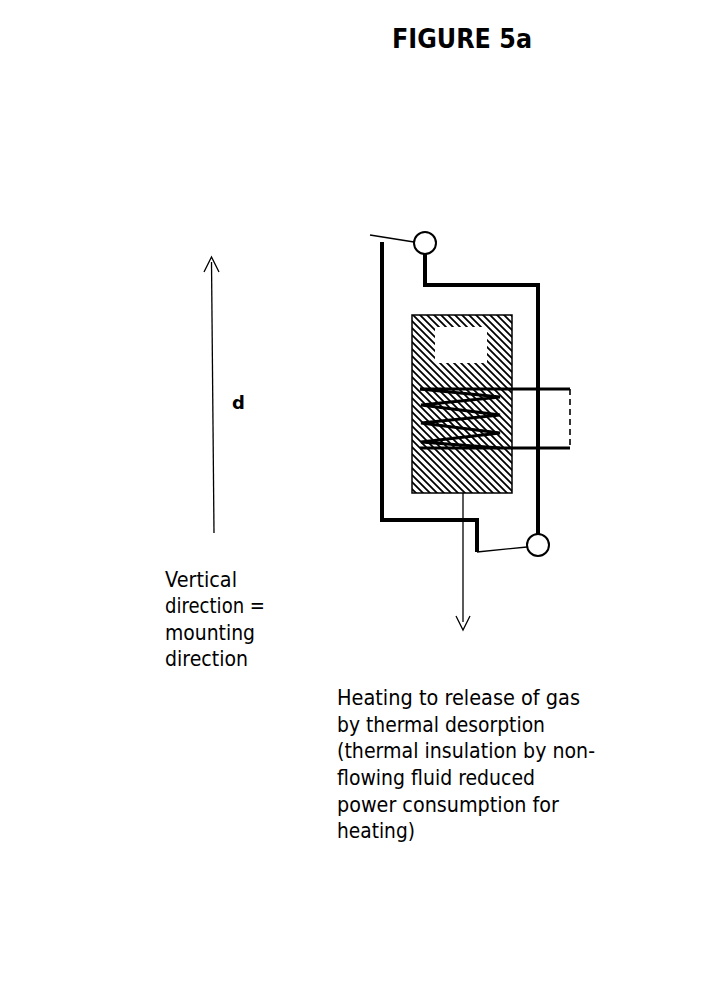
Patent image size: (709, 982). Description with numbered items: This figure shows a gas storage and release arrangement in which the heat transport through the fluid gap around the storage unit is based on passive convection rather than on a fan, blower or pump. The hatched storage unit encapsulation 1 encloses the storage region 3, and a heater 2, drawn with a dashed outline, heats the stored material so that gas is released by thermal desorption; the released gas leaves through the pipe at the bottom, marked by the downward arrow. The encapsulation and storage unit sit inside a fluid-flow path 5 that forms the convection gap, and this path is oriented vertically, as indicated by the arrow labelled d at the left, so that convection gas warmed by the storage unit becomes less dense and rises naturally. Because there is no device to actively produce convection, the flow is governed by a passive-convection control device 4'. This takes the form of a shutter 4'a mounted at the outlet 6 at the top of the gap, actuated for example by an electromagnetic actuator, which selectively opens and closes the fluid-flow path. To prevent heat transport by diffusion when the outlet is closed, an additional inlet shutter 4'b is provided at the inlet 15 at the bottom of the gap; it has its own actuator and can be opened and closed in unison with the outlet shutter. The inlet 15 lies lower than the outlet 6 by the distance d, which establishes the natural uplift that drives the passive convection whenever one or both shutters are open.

The sorbent housing 1 is at (515, 325).
The heater 2 is at (574, 441).
The sorbent chamber 3 is at (461, 345).
The fluid conduit loop 5 is at (545, 283).
The passive-convection control device 4' is at (478, 223).
The shutter 4'a is at (478, 223).
The outlet 6 is at (423, 224).
The inlet shutter 4'b is at (599, 571).
The inlet 15 is at (519, 570).